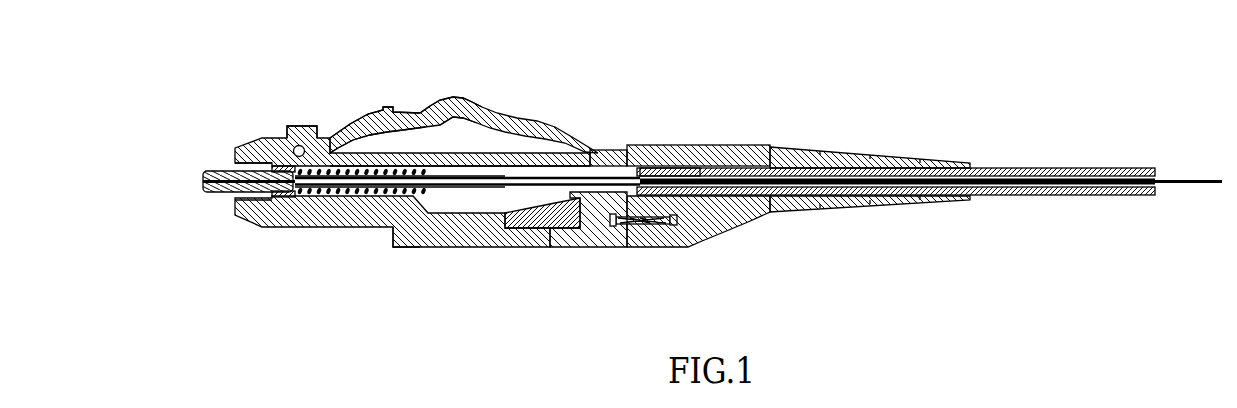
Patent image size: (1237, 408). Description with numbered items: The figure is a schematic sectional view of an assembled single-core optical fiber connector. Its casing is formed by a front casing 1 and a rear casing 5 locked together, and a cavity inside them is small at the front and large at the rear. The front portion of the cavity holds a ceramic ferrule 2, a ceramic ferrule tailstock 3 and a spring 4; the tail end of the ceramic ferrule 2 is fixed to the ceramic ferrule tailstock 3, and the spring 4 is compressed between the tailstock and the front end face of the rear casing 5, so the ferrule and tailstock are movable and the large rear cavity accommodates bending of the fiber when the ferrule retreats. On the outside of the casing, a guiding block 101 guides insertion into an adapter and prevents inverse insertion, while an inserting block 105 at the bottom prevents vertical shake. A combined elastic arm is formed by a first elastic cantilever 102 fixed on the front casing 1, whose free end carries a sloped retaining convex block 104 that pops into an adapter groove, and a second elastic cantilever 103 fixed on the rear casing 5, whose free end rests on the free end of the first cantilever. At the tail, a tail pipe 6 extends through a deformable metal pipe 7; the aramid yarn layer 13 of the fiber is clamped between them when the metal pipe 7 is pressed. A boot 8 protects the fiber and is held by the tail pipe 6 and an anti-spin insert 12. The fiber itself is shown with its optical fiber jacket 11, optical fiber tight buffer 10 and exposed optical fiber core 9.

The front casing 1 is at (297, 213).
The ceramic ferrule 2 is at (227, 173).
The ceramic ferrule tailstock 3 is at (290, 170).
The spring 4 is at (366, 196).
The rear casing 5 is at (592, 228).
The tail pipe 6 is at (615, 168).
The metal pipe 7 is at (702, 167).
The boot 8 is at (793, 150).
The optical fiber core 9 is at (1195, 178).
The optical fiber tight buffer 10 is at (485, 180).
The optical fiber jacket 11 is at (1038, 170).
The anti-spin insert 12 is at (657, 220).
The aramid yarn layer 13 is at (653, 167).
The guiding block 101 is at (307, 130).
The first elastic cantilever 102 is at (422, 115).
The second elastic cantilever 103 is at (488, 102).
The retaining convex block 104 is at (387, 110).
The inserting block 105 is at (398, 247).